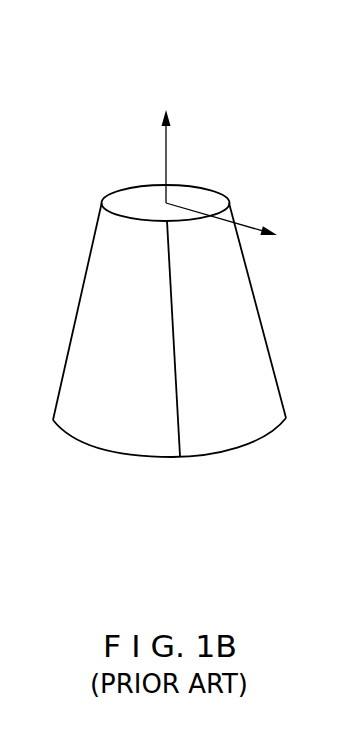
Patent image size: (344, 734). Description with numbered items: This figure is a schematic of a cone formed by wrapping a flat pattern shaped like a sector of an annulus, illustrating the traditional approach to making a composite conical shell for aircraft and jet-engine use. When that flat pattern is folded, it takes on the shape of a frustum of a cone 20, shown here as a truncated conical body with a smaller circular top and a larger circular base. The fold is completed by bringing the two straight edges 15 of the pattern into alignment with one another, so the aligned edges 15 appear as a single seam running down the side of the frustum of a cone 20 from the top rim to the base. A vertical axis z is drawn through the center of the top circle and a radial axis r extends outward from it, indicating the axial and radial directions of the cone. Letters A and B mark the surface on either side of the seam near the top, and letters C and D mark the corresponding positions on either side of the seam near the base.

The frustum of a cone 20 is at (83, 146).
The straight edges 15 is at (161, 329).
The axial (z) coordinate axis z is at (175, 140).
The radial (r) coordinate axis r is at (231, 224).
The surface region A (top left of seam) A is at (144, 241).
The surface region B (top right of seam) B is at (184, 241).
The surface region C (bottom left of seam) C is at (160, 438).
The surface region D (bottom right of seam) D is at (199, 435).